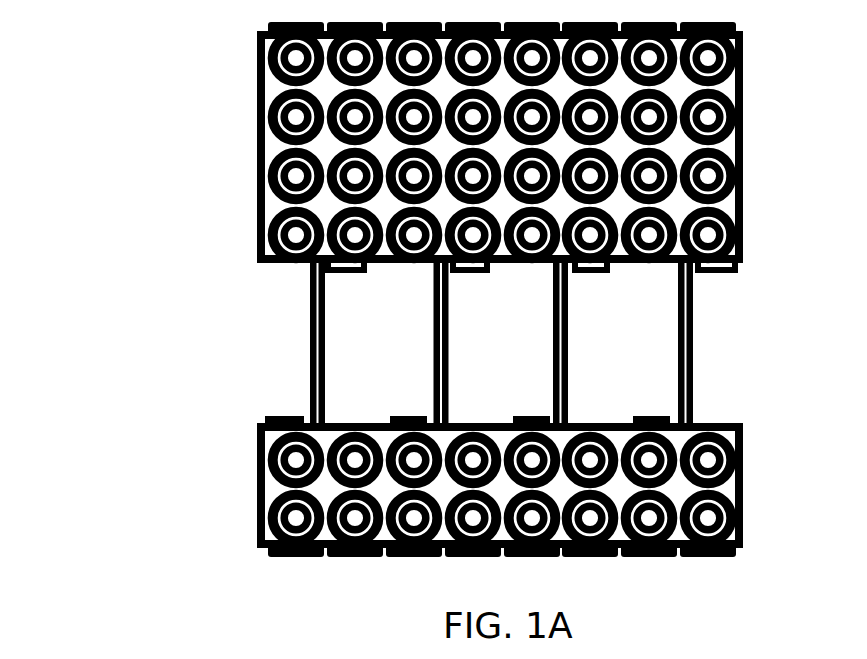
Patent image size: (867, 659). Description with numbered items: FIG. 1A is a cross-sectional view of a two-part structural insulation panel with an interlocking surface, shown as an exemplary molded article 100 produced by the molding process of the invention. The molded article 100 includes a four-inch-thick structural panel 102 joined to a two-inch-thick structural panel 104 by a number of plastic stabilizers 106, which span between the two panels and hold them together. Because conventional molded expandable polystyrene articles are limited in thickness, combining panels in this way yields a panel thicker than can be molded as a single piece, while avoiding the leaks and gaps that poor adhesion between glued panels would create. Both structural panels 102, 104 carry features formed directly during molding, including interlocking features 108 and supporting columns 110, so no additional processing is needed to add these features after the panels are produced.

The molded article 100 is at (128, 107).
The structural panel 102 is at (258, 203).
The structural panel 104 is at (260, 480).
The plastic stabilizers 106 is at (310, 368).
The interlocking features 108 is at (735, 552).
The supporting columns 110 is at (737, 272).